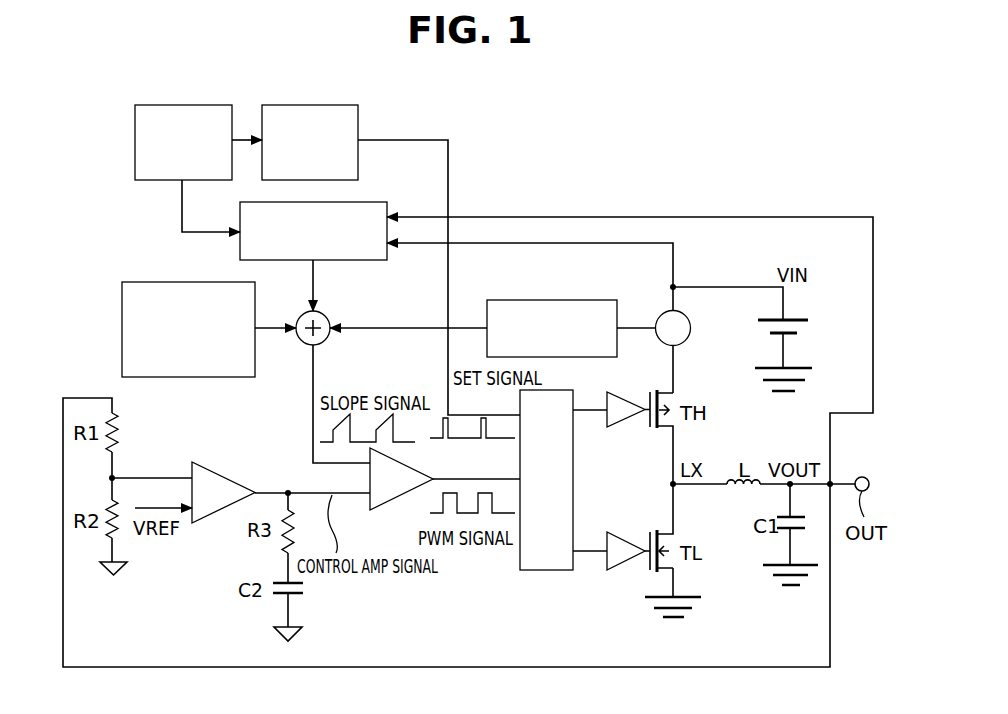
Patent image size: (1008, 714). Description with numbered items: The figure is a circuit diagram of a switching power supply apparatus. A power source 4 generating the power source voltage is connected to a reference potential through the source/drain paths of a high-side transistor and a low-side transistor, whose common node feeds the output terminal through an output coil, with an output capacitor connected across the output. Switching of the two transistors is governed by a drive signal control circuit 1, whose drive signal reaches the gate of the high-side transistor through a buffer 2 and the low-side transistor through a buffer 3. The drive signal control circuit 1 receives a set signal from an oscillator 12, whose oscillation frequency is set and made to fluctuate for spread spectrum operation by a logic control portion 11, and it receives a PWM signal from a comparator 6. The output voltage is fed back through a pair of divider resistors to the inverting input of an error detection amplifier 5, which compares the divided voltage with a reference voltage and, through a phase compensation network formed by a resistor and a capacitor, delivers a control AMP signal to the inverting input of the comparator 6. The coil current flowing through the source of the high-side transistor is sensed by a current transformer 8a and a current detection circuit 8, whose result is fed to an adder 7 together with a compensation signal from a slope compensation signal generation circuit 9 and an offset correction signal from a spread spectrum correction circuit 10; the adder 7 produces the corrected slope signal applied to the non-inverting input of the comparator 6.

The drive signal control circuit 1 is at (575, 478).
The buffer 2 is at (628, 396).
The buffer 3 is at (630, 540).
The power source 4 is at (810, 333).
The error detection amplifier 5 is at (243, 480).
The comparator 6 is at (412, 457).
The adder 7 is at (325, 314).
The current detection circuit 8 is at (551, 300).
The current transformer 8a is at (691, 328).
The slope compensation signal generation circuit 9 is at (255, 306).
The spread spectrum correction circuit 10 is at (362, 202).
The logic control portion 11 is at (185, 105).
The oscillator 12 is at (310, 105).